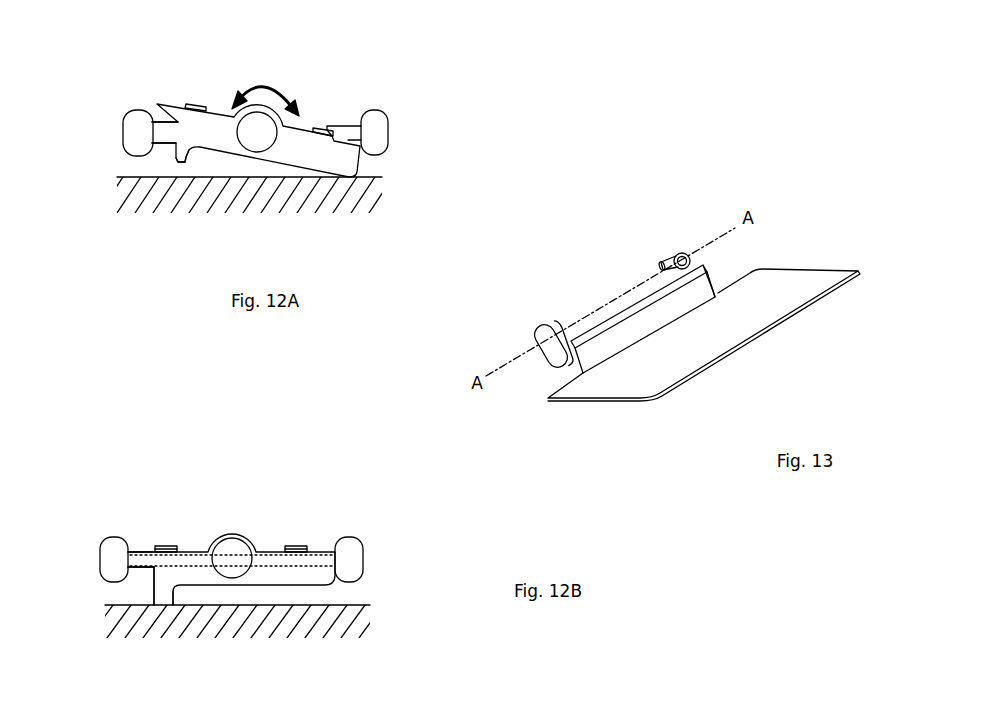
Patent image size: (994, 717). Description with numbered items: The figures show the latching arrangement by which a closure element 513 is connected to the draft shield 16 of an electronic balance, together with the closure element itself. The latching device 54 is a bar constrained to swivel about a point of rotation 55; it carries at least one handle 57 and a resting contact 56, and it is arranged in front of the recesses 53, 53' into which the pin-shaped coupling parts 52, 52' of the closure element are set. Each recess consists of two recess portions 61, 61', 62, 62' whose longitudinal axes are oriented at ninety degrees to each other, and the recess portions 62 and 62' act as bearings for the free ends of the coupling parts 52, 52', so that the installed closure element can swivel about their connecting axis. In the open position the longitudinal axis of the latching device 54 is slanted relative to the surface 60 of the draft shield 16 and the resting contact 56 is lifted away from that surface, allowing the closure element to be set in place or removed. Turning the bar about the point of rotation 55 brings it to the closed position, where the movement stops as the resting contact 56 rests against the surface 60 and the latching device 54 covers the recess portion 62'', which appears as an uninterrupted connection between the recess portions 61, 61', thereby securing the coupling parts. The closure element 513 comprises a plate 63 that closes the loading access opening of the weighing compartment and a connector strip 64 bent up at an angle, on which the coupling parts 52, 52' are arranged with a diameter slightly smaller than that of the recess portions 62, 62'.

In FIG. 12A, the draft shield 16 is at (357, 190).
In FIG. 12B, the draft shield 16 is at (318, 627).
In FIG. 13, the coupling part 52 is at (555, 301).
In FIG. 13, the coupling part 52' is at (669, 227).
In FIG. 12A, the recess 53 is at (69, 116).
In FIG. 12B, the recess 53 is at (71, 498).
In FIG. 12A, the recess 53' is at (393, 66).
In FIG. 12B, the recess 53' is at (406, 523).
In FIG. 12A, the latching device 54 is at (318, 158).
In FIG. 12B, the latching device 54 is at (305, 575).
In FIG. 12A, the point of rotation 55 is at (256, 128).
In FIG. 12B, the point of rotation 55 is at (232, 556).
In FIG. 12A, the resting contact 56 is at (183, 157).
In FIG. 12B, the resting contact 56 is at (163, 593).
In FIG. 12A, the handle 57 is at (194, 104).
In FIG. 12B, the handle 57 is at (168, 546).
In FIG. 12A, the surface 60 is at (117, 177).
In FIG. 12B, the surface 60 is at (110, 608).
In FIG. 12A, the recess portion 61 is at (105, 110).
In FIG. 12B, the recess portion 61 is at (238, 574).
In FIG. 12A, the recess portion 61' is at (407, 121).
In FIG. 12A, the recess portion 62 is at (127, 82).
In FIG. 12A, the recess portion 62' is at (344, 76).
In FIG. 12B, the recess portion 62'' is at (133, 507).
In FIG. 13, the plate 63 is at (704, 335).
In FIG. 13, the connector strip 64 is at (605, 338).
In FIG. 13, the closure element 513 is at (778, 355).